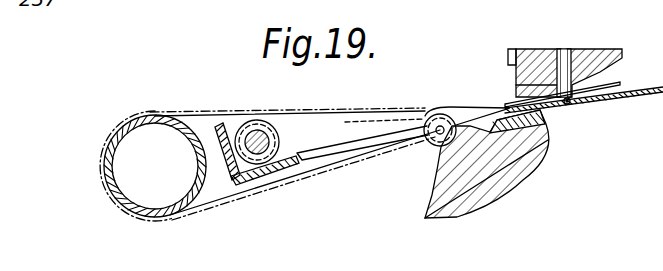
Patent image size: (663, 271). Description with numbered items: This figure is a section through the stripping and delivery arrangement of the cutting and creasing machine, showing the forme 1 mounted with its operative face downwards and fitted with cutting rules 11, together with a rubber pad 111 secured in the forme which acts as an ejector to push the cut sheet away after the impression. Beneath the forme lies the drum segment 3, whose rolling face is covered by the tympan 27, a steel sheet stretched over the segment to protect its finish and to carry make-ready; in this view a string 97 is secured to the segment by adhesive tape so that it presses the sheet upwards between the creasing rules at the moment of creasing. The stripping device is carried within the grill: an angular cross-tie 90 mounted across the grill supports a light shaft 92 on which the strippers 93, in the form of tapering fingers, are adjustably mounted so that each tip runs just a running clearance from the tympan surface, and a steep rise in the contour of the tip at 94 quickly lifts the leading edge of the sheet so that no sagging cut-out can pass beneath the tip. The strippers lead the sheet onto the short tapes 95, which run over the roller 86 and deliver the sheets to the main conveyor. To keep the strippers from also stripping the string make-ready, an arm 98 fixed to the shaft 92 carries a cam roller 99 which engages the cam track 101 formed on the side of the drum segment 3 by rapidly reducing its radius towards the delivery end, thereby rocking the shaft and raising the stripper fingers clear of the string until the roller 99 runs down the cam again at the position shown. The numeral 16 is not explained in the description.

The forme 1 is at (590, 50).
The drum segment 3 is at (507, 168).
The cutting rules 11 is at (511, 49).
The plate 16 is at (612, 83).
The tympan 27 is at (632, 94).
The roller 86 is at (196, 152).
The angular cross-tie 90 is at (230, 185).
The shaft 92 is at (263, 154).
The stripper 93 is at (460, 106).
The steep rise in the contour of the stripper tip 94 is at (500, 108).
The short tapes 95 is at (240, 112).
The string 97 is at (570, 104).
The arm 98 is at (413, 141).
The cam roller 99 is at (436, 146).
The cam track 101 is at (448, 197).
The rubber pad 111 is at (552, 50).